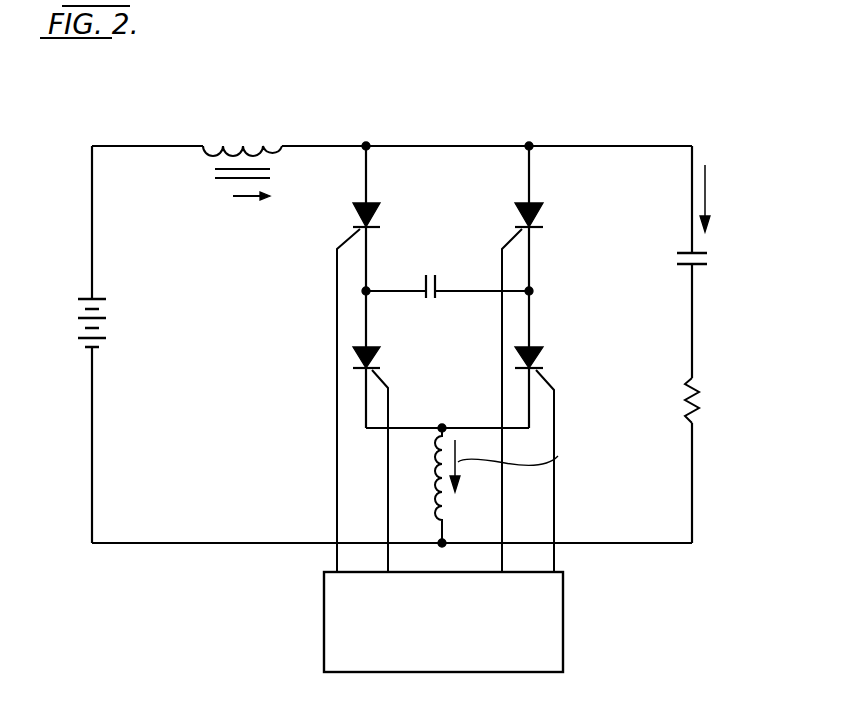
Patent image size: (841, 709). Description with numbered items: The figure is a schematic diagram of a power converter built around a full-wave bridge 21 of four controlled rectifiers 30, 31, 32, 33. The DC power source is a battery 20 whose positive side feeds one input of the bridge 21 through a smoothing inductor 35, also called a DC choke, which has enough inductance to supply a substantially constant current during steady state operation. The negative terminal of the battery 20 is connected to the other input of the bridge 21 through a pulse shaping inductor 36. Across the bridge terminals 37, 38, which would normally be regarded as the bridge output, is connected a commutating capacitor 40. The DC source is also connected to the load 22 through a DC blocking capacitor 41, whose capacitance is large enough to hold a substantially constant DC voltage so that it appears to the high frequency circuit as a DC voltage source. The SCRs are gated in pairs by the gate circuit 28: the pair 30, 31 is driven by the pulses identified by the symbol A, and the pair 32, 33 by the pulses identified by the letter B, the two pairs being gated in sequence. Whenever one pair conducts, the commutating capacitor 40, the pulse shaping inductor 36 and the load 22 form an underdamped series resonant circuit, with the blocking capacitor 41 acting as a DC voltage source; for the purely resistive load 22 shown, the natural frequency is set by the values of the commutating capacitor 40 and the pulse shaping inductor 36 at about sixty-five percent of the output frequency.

The battery 20 is at (76, 302).
The bridge 21 is at (470, 146).
The load 22 is at (712, 390).
The gate circuit 28 is at (324, 640).
The controlled rectifier 30 is at (356, 205).
The controlled rectifier 31 is at (545, 348).
The controlled rectifier 32 is at (517, 206).
The controlled rectifier 33 is at (352, 357).
The smoothing inductor 35 is at (259, 142).
The pulse shaping inductor 36 is at (420, 487).
The bridge terminal 37 is at (352, 291).
The bridge terminal 38 is at (531, 291).
The commutating capacitor 40 is at (429, 305).
The DC blocking capacitor 41 is at (676, 259).